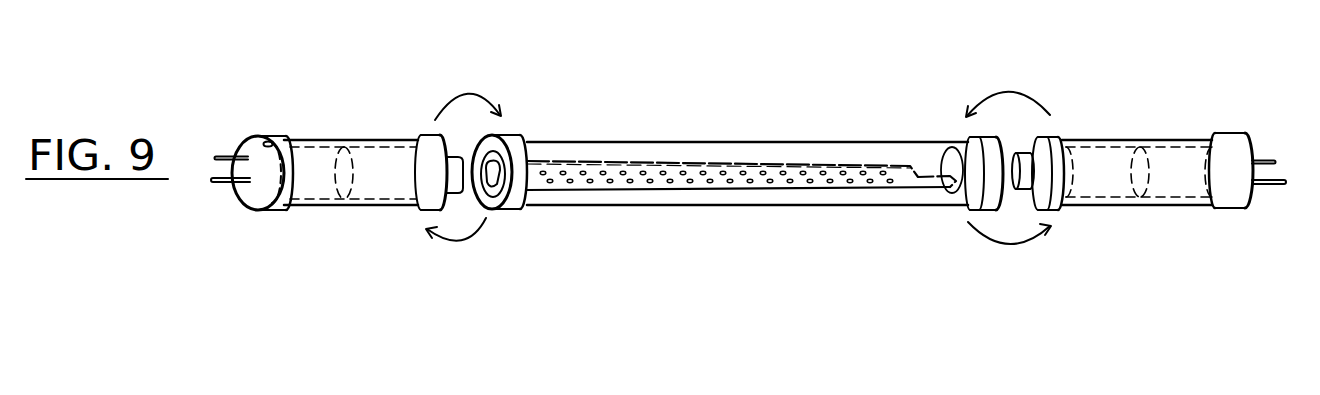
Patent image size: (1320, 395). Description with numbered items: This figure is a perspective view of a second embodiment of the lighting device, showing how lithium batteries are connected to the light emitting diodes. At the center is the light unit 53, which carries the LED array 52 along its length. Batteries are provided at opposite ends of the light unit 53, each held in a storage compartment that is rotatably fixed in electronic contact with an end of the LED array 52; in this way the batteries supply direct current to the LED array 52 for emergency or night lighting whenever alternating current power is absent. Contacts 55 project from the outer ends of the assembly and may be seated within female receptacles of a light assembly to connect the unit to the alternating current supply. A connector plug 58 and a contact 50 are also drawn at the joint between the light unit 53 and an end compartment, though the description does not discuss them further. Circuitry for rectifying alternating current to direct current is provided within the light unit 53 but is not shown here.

The electrical contact 50 is at (268, 141).
The LED array 52 is at (810, 166).
The light unit 53 is at (741, 207).
The contact 55 is at (1268, 159).
The connector plug 58 is at (1018, 151).